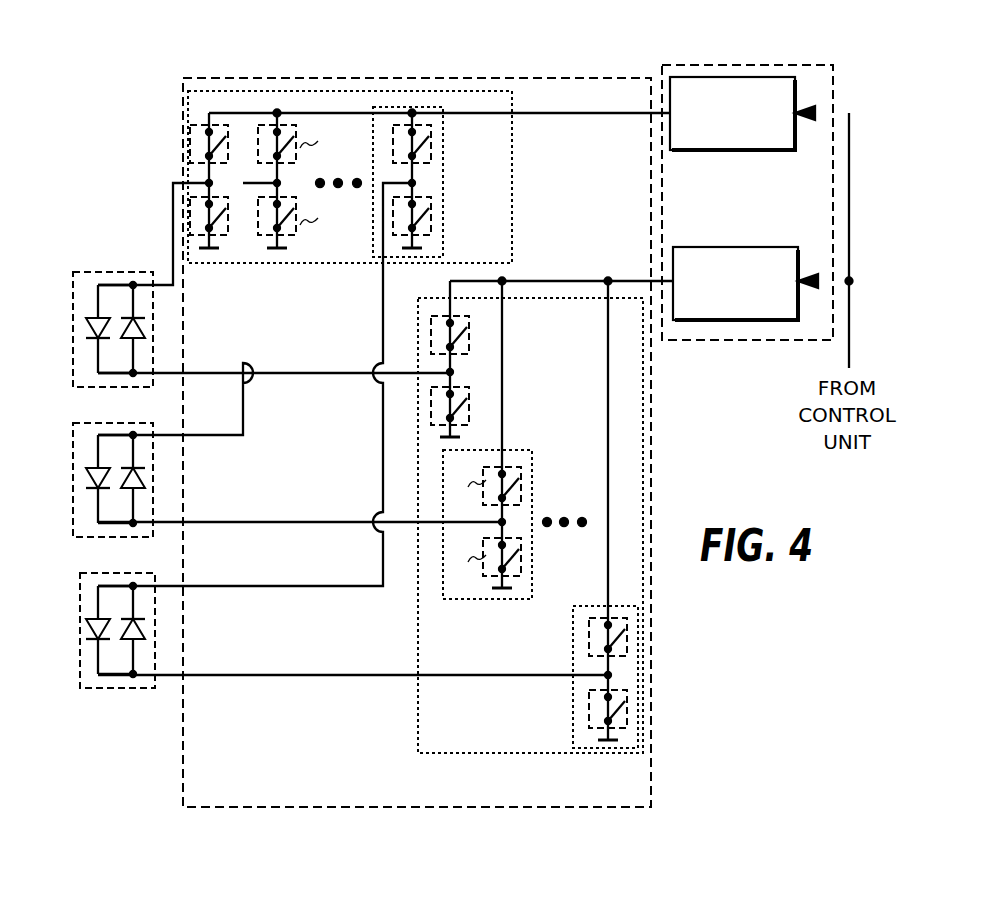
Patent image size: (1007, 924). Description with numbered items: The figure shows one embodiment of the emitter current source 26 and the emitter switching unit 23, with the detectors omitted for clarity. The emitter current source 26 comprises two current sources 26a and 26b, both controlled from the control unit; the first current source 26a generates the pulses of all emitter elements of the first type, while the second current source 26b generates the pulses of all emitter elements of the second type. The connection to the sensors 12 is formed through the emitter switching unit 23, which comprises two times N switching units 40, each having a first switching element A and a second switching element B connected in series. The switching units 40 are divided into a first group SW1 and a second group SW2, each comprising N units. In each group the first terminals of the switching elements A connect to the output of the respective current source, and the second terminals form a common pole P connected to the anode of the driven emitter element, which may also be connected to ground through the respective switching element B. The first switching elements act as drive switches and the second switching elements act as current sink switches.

The sensors 12 is at (57, 627).
The emitter switching unit 23 is at (315, 807).
The emitter current source 26 is at (717, 65).
The first current source 26a is at (728, 152).
The second current source 26b is at (738, 247).
The switching unit 40 is at (444, 178).
The first group SW1 is at (513, 161).
The second group SW2 is at (417, 623).